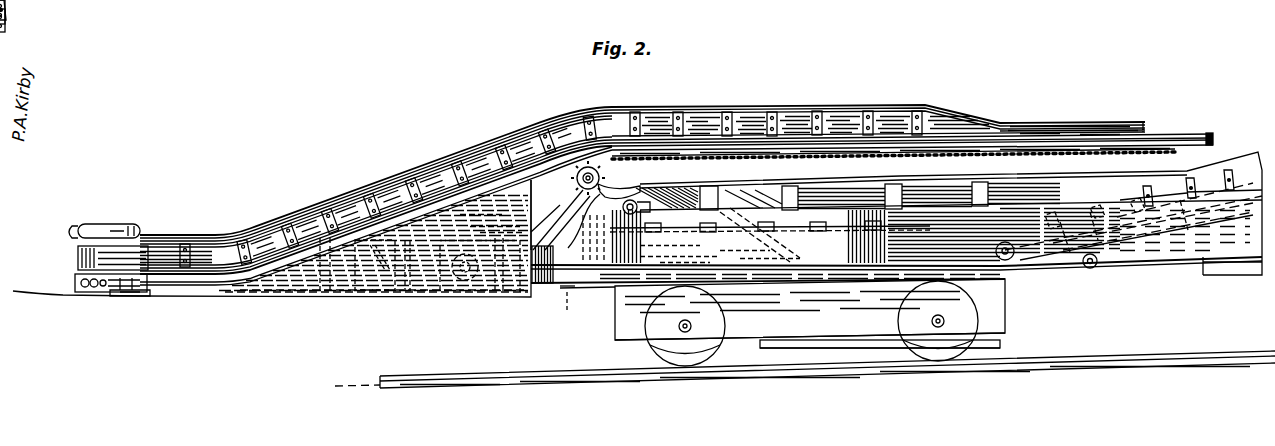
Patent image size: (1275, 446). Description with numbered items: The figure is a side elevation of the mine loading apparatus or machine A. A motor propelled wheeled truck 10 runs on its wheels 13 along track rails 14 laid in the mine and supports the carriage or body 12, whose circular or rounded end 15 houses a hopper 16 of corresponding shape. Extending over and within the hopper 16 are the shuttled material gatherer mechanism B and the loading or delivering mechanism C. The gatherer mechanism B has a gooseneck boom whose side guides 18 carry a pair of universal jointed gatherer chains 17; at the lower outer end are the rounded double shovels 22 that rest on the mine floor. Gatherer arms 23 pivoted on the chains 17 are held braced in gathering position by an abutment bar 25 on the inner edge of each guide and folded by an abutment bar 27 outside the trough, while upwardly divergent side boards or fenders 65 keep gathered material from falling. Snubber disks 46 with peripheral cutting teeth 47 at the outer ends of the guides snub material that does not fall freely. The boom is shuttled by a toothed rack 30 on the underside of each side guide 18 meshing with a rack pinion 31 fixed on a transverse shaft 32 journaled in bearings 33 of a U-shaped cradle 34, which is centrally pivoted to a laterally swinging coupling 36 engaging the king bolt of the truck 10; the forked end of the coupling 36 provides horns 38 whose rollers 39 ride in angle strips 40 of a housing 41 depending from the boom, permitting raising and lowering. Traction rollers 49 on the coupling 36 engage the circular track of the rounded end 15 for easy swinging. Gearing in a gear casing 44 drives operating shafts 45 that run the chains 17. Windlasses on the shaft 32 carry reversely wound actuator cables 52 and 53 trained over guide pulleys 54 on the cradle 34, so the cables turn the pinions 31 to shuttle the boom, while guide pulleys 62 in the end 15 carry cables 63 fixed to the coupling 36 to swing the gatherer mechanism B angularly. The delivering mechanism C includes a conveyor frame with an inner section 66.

The motor propelled wheeled truck 10 is at (607, 322).
The carriage or body 12 is at (1176, 270).
The wheels 13 is at (650, 349).
The track rails 14 is at (1100, 360).
The rounded end 15 is at (738, 215).
The hopper 16 is at (862, 196).
The gatherer chains 17 is at (133, 296).
The side guides 18 is at (142, 276).
The double shovels 22 is at (31, 296).
The gatherer arms 23 is at (76, 279).
The abutment bar 25 is at (1082, 124).
The abutment bar 27 is at (1200, 132).
The toothed rack 30 is at (922, 157).
The rack pinion 31 is at (610, 182).
The shaft 32 is at (560, 214).
The bearings 33 is at (588, 157).
The cradle 34 is at (483, 228).
The coupling 36 is at (598, 289).
The horns 38 is at (548, 286).
The rollers 39 is at (465, 292).
The angle strips 40 is at (498, 297).
The housing 41 is at (350, 297).
The gear casing 44 is at (410, 297).
The operating shafts 45 is at (262, 294).
The snubber disks 46 is at (106, 224).
The cutting teeth 47 is at (72, 226).
The traction rollers 49 is at (645, 206).
The actuator cable 52 is at (1055, 268).
The actuator cable 53 is at (1114, 270).
The guide pulleys 54 is at (566, 314).
The guide pulleys 62 is at (708, 232).
The cables 63 is at (672, 233).
The side boards or fenders 65 is at (480, 145).
The inner section 66 is at (1230, 186).
The apparatus or machine A is at (530, 300).
The shuttled material gatherer mechanism B is at (290, 205).
The loading or delivering mechanism C is at (1246, 154).